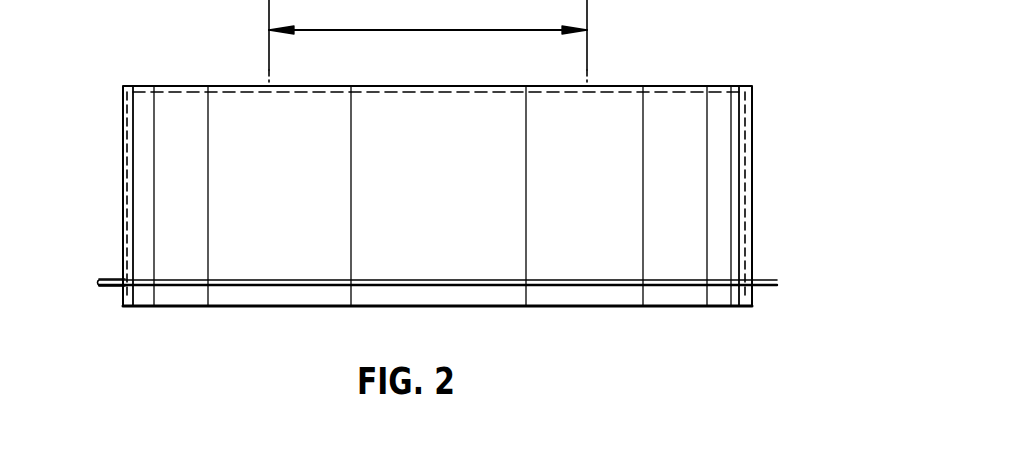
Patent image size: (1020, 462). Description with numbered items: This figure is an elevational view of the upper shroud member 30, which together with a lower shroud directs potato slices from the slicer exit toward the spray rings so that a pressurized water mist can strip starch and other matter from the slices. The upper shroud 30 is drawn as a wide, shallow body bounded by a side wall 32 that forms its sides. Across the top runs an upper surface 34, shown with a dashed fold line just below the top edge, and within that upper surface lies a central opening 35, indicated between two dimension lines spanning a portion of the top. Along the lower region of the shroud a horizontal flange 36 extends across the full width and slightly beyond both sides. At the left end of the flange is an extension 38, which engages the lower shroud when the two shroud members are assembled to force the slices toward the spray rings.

The upper shroud member 30 is at (807, 127).
The side wall 32 is at (757, 208).
The upper surface 34 is at (692, 88).
The central opening 35 is at (256, 113).
The flange 36 is at (770, 290).
The extension 38 is at (121, 298).